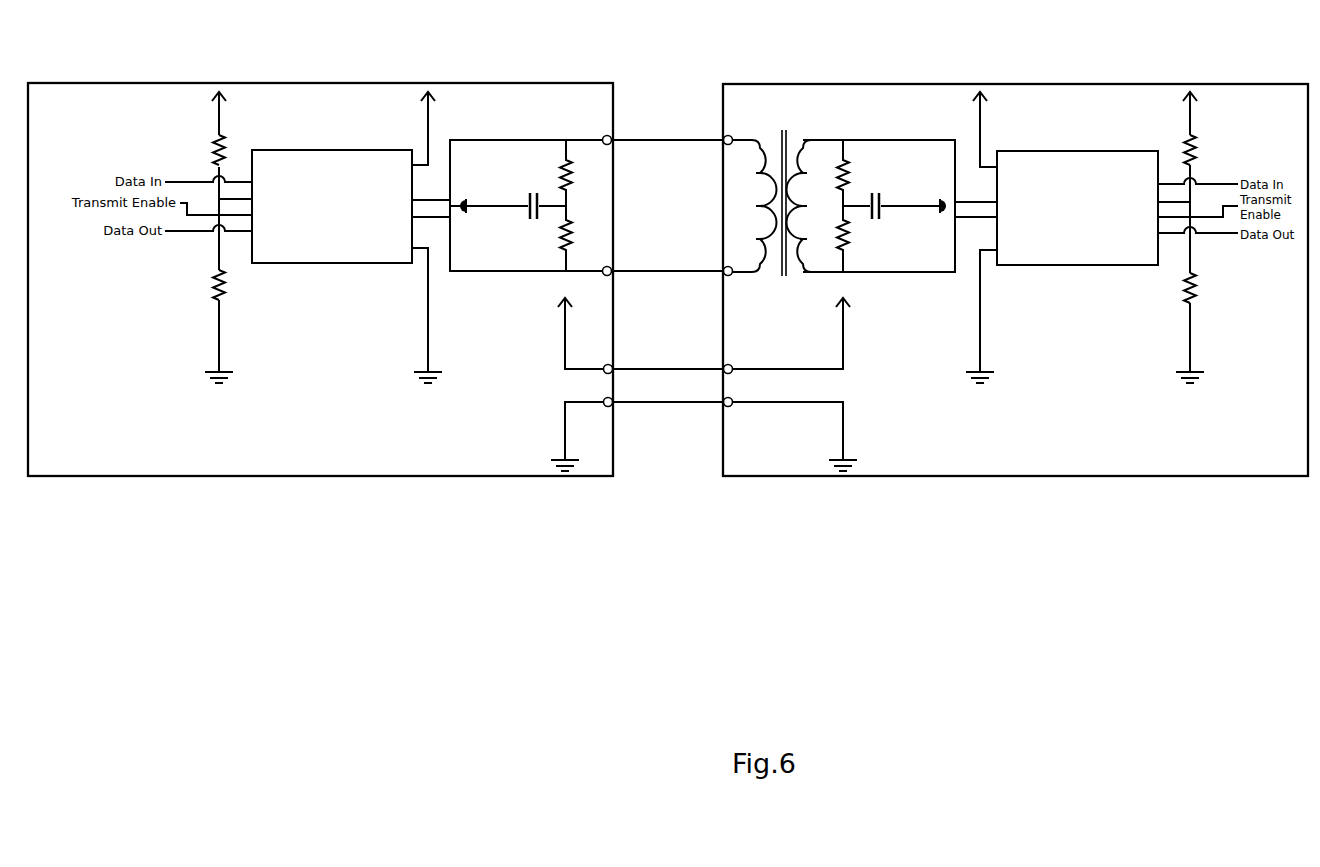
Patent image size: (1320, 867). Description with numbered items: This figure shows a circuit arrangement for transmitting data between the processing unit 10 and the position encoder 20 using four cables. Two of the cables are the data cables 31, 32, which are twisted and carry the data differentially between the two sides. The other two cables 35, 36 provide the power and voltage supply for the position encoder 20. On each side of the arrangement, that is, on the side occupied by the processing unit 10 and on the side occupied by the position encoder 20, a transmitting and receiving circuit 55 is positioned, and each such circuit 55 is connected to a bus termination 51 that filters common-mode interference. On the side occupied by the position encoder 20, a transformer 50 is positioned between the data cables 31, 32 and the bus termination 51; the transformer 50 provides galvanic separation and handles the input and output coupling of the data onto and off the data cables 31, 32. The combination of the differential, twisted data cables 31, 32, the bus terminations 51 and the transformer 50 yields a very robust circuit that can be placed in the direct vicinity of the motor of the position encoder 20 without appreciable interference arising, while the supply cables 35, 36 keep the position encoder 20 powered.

The processing unit 10 is at (76, 118).
The position encoder 20 is at (1250, 108).
The data cable 31 is at (660, 140).
The data cable 32 is at (703, 267).
The cable 35 is at (705, 370).
The cable 36 is at (632, 402).
The transformer 50 is at (782, 140).
The bus termination 51 is at (545, 170).
The transmitting and receiving circuit 55 is at (333, 193).